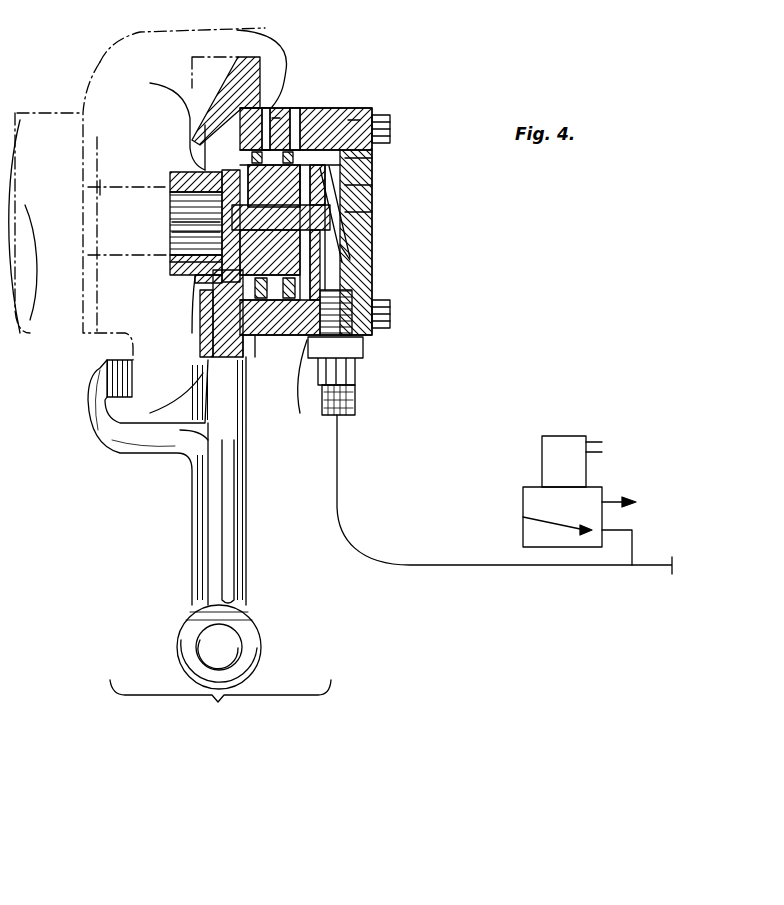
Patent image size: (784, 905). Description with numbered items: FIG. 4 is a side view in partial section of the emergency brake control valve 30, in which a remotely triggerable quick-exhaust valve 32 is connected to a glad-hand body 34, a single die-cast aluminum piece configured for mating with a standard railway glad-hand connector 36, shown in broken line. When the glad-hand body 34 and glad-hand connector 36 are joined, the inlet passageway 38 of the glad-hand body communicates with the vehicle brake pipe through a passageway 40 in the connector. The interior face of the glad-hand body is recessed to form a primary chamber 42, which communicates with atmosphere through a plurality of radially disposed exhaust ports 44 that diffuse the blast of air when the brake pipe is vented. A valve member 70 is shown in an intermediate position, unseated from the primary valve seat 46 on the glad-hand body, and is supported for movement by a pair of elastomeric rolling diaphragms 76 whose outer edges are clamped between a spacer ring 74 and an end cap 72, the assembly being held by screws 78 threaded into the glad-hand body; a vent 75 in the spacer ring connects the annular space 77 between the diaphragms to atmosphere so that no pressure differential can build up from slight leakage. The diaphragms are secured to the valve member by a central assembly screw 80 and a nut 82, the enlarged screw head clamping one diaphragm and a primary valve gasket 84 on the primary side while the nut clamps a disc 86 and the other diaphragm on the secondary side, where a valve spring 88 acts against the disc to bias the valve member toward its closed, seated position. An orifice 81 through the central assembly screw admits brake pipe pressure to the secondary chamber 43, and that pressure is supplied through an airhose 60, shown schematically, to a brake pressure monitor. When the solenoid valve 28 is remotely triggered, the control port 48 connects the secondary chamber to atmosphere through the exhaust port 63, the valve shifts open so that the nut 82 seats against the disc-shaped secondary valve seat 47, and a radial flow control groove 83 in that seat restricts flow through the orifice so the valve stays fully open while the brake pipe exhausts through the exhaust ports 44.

The solenoid valve 28 is at (588, 495).
The emergency brake control valve 30 is at (220, 669).
The quick-exhaust valve 32 is at (383, 248).
The glad-hand body 34 is at (176, 521).
The glad-hand connector 36 is at (104, 56).
The inlet passageway 38 is at (183, 203).
The passageway 40 is at (127, 228).
The primary chamber 42 is at (197, 287).
The secondary chamber 43 is at (377, 157).
The exhaust ports 44 is at (185, 99).
The primary valve seat 46 is at (195, 160).
The secondary valve seat 47 is at (373, 190).
The control port 48 is at (375, 298).
The airhose 60 is at (355, 398).
The exhaust port 63 is at (615, 493).
The valve member 70 is at (285, 337).
The end cap 72 is at (342, 107).
The spacer ring 74 is at (248, 340).
The vent 75 is at (293, 130).
The rolling diaphragms 76 is at (267, 107).
The annular space 77 is at (303, 123).
The screws 78 is at (393, 122).
The central assembly screw 80 is at (182, 247).
The orifice 81 is at (200, 225).
The nut 82 is at (357, 246).
The flow control groove 83 is at (377, 207).
The primary valve gasket 84 is at (173, 263).
The disc 86 is at (292, 394).
The valve spring 88 is at (373, 240).